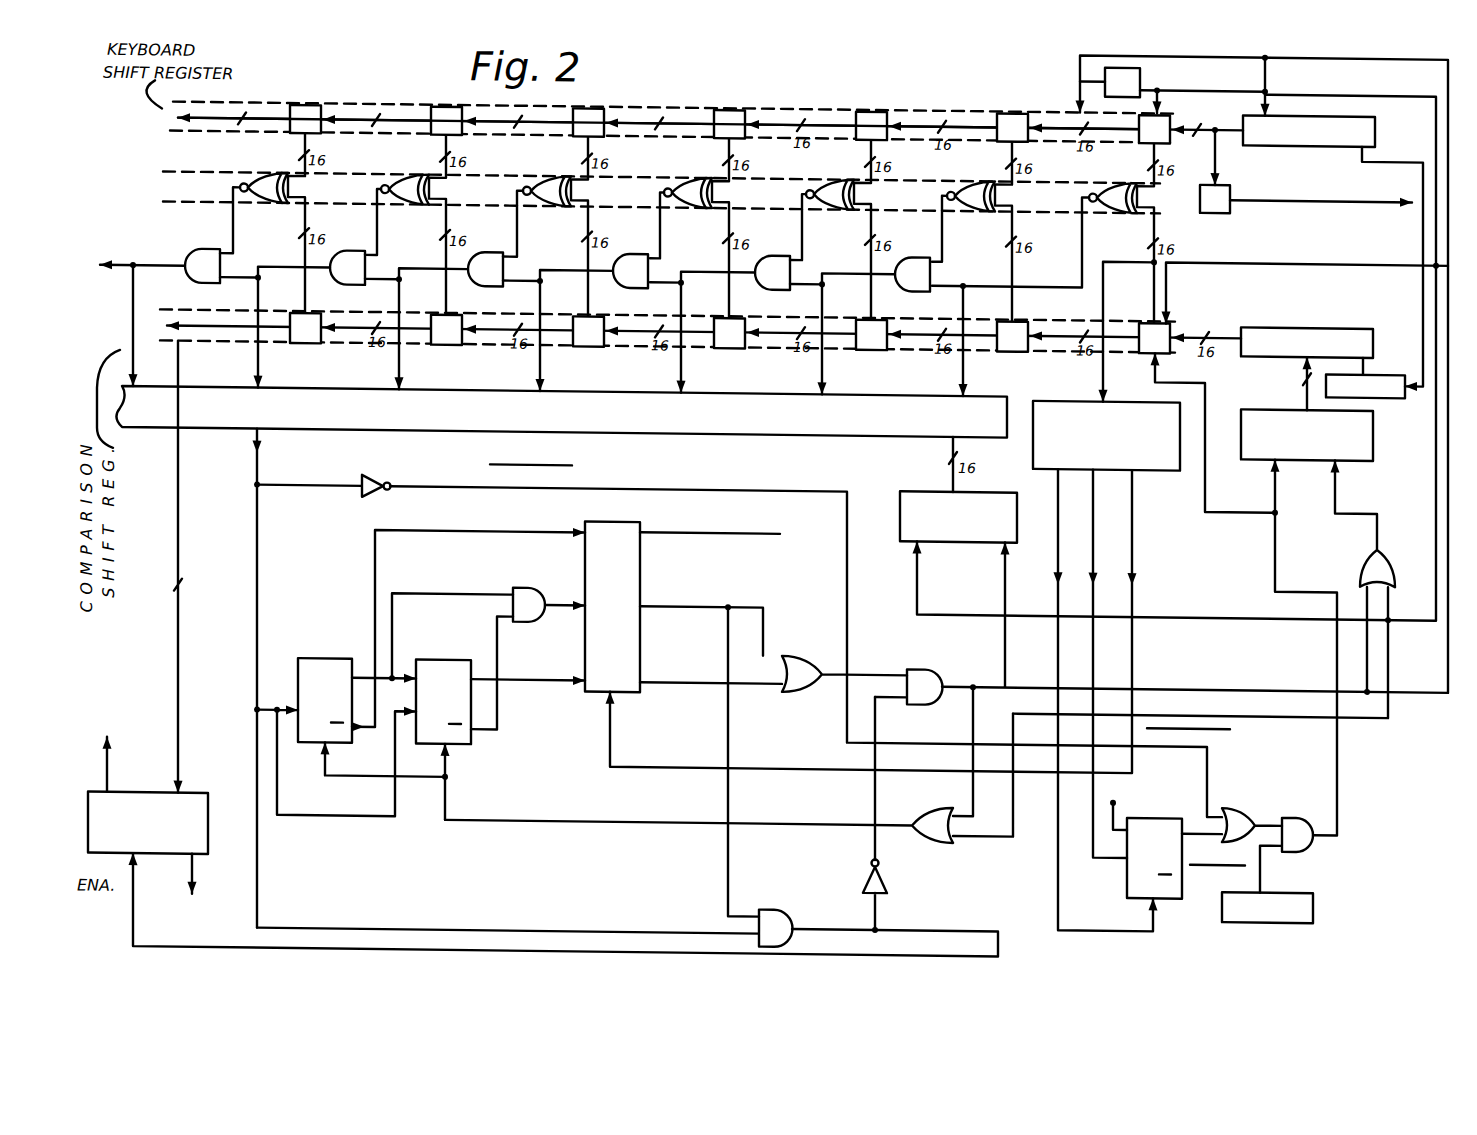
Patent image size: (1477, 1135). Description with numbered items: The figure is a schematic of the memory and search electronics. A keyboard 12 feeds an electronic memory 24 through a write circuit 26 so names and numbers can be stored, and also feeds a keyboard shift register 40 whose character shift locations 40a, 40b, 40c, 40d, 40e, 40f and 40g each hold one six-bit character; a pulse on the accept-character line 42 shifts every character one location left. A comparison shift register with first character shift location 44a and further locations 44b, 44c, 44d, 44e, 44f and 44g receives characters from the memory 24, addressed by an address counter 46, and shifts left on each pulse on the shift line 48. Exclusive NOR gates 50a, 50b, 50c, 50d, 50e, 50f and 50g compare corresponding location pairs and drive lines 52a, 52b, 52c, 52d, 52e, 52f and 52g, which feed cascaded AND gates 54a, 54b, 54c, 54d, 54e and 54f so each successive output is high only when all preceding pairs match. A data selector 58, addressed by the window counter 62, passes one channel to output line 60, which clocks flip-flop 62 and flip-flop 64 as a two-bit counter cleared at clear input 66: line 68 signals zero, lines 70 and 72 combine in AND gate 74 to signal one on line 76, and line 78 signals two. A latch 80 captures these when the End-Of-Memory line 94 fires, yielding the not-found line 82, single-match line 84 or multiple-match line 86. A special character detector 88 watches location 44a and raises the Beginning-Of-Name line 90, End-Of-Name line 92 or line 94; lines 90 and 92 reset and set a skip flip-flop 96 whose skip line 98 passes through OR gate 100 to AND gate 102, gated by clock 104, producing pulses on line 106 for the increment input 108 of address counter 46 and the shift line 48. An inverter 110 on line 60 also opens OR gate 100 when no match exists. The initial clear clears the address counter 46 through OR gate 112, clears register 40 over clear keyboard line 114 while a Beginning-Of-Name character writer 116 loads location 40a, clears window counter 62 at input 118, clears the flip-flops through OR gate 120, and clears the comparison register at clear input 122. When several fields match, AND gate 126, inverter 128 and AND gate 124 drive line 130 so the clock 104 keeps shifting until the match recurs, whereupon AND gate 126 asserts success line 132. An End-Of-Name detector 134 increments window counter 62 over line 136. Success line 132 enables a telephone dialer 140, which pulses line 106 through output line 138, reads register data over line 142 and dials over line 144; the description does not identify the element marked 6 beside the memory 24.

The shift register 40 is at (933, 117).
The character shift location 40a is at (1173, 110).
The character shift location 40b is at (1030, 133).
The character shift location 40c is at (876, 106).
The character shift location 40d is at (737, 94).
The character shift location 40e is at (590, 108).
The character shift location 40f is at (458, 100).
The character shift location 40g is at (324, 106).
The accept character, shift keyboard register line 42 is at (1080, 58).
The Beginning-Of-Name character writer 116 is at (1080, 76).
The clear keyboard line 114 is at (1436, 95).
The keyboard 12 is at (1375, 122).
The End-Of-Name detector 134 is at (1218, 174).
The line 136 is at (1253, 189).
The clear input 122 is at (797, 650).
The exclusive NOR gate 50a is at (1128, 166).
The exclusive NOR gate 50b is at (980, 173).
The exclusive NOR gate 50c is at (839, 173).
The exclusive NOR gate 50d is at (697, 173).
The exclusive NOR gate 50e is at (556, 173).
The exclusive NOR gate 50f is at (414, 173).
The exclusive NOR gate 50g is at (273, 173).
The line 52a is at (1083, 225).
The line 52b is at (943, 225).
The line 52c is at (803, 225).
The line 52d is at (661, 225).
The line 52e is at (518, 225).
The line 52f is at (378, 225).
The line 52g is at (233, 224).
The AND gate 54a is at (932, 270).
The AND gate 54b is at (767, 284).
The AND gate 54c is at (625, 284).
The AND gate 54d is at (480, 284).
The AND gate 54e is at (342, 284).
The AND gate 54f is at (197, 284).
The first character shift location 44a is at (1168, 313).
The character shift location 44b is at (1008, 343).
The character shift location 44c is at (867, 343).
The character shift location 44d is at (725, 343).
The character shift location 44e is at (584, 343).
The character shift location 44f is at (442, 343).
The character shift location 44g is at (301, 343).
The electronic memory 24 is at (1306, 316).
The memory unit 6 is at (1430, 287).
The write circuit 26 is at (1364, 362).
The address counter 46 is at (1262, 398).
The shift line 48 is at (1226, 502).
The increment input 108 is at (1276, 502).
The output line 106 is at (1300, 580).
The OR gate 112 is at (1380, 546).
The inverter 110 is at (378, 474).
The special character detector 88 is at (1150, 460).
The Beginning-Of-Name output line 90 is at (1058, 628).
The End-Of-Name output line 92 is at (1093, 636).
The line 94 is at (612, 735).
The data selector 58 is at (824, 429).
The window counter 62 is at (324, 658).
The output line 60 is at (255, 487).
The line 68 is at (375, 552).
The line 70 is at (420, 592).
The AND gate 74 is at (518, 585).
The line 76 is at (556, 604).
The line 78 is at (533, 680).
The line 72 is at (498, 728).
The flip-flop 64 is at (452, 658).
The clear input 66 is at (445, 822).
The latch 80 is at (641, 557).
The not found line 82 is at (724, 529).
The latch output line 84 is at (729, 602).
The line 86 is at (755, 679).
The input 118 is at (917, 608).
The AND gate 124 is at (925, 662).
The OR gate 120 is at (937, 800).
The AND gate 126 is at (780, 904).
The inverter 128 is at (888, 876).
The line 132 is at (905, 924).
The line 130 is at (1243, 679).
The flip-flop 96 is at (1160, 889).
The output line 98 is at (1181, 808).
The OR gate 100 is at (1247, 798).
The AND gate 102 is at (1310, 840).
The clock 104 is at (1300, 912).
The output line 138 is at (108, 770).
The telephone dialer 140 is at (148, 823).
The line 142 is at (178, 616).
The line 144 is at (196, 887).